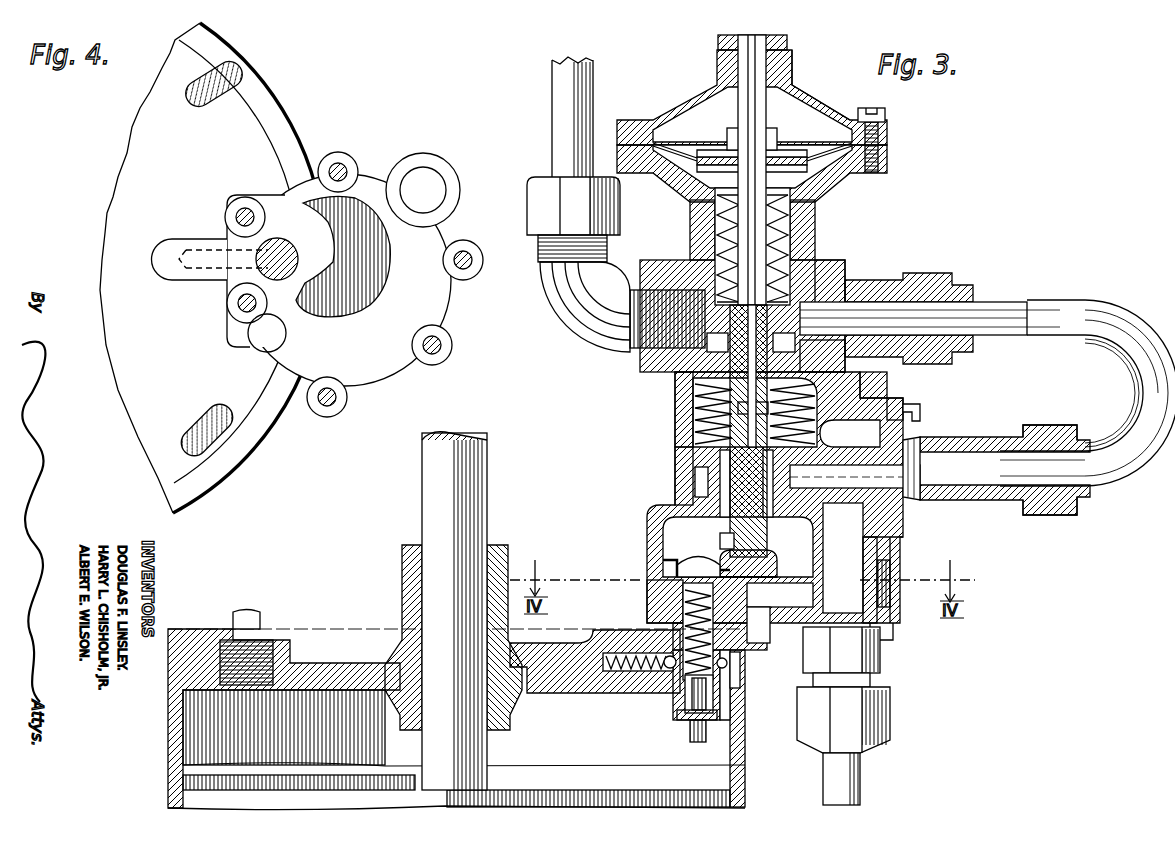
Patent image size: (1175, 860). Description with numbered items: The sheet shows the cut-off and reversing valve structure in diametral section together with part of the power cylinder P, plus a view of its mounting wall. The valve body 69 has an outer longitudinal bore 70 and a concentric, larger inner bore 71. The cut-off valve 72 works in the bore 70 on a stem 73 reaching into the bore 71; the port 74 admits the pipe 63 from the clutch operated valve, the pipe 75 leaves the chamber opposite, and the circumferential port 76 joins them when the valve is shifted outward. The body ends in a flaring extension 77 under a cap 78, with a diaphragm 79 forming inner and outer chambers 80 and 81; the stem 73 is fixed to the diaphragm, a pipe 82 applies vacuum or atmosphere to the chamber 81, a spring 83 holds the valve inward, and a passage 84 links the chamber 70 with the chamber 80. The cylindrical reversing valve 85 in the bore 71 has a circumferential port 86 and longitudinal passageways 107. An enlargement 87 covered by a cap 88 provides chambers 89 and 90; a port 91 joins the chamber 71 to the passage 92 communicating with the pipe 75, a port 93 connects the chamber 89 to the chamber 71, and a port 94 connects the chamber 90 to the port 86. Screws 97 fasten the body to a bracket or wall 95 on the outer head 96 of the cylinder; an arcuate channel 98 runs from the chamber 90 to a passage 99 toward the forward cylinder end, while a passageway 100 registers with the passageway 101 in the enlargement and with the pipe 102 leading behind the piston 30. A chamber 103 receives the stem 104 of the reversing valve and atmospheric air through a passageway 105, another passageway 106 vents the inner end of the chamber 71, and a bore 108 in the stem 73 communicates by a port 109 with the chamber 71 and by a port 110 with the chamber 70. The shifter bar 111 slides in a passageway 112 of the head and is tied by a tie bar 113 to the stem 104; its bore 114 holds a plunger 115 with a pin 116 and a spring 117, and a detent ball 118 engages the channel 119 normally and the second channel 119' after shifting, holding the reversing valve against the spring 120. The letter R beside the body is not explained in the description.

In FIG. 3, the piston 30 is at (545, 790).
In FIG. 3, the pipe 63 is at (576, 122).
In FIG. 3, the valve body 69 is at (685, 432).
In FIG. 3, the outer longitudinal bore 70 is at (800, 245).
In FIG. 3, the inner bore 71 is at (712, 400).
In FIG. 3, the cut-off valve 72 is at (700, 345).
In FIG. 3, the stem 73 is at (725, 240).
In FIG. 3, the port 74 is at (698, 315).
In FIG. 3, the pipe 75 is at (1050, 312).
In FIG. 3, the port 76 is at (810, 336).
In FIG. 3, the flaring extension 77 is at (862, 172).
In FIG. 3, the cap 78 is at (806, 104).
In FIG. 3, the diaphragm 79 is at (820, 138).
In FIG. 3, the inner chamber 80 is at (672, 180).
In FIG. 3, the outer chamber 81 is at (720, 110).
In FIG. 3, the pipe 82 is at (735, 40).
In FIG. 3, the spring 83 is at (815, 266).
In FIG. 3, the passage 84 is at (800, 190).
In FIG. 3, the reversing valve 85 is at (695, 482).
In FIG. 3, the port 86 is at (818, 472).
In FIG. 3, the enlargement 87 is at (896, 405).
In FIG. 3, the cap 88 is at (950, 515).
In FIG. 3, the outer chamber 89 is at (856, 430).
In FIG. 3, the inner chamber 90 is at (850, 556).
In FIG. 3, the port 91 is at (885, 538).
In FIG. 3, the passage 92 is at (985, 512).
In FIG. 3, the port 93 is at (845, 433).
In FIG. 3, the port 94 is at (818, 505).
In FIG. 4, the bracket or wall 95 is at (392, 378).
In FIG. 3, the bracket or wall 95 is at (895, 618).
In FIG. 4, the outer head 96 is at (283, 433).
In FIG. 3, the outer head 96 is at (600, 695).
In FIG. 4, the screws 97 is at (442, 345).
In FIG. 3, the screws 97 is at (893, 635).
In FIG. 4, the arcuate channel 98 is at (345, 362).
In FIG. 3, the arcuate channel 98 is at (880, 598).
In FIG. 4, the passage 99 is at (262, 340).
In FIG. 4, the passageway 100 is at (424, 180).
In FIG. 3, the passageway 100 is at (802, 621).
In FIG. 3, the passageway 101 is at (920, 416).
In FIG. 3, the pipe 102 is at (862, 780).
In FIG. 3, the chamber 103 is at (660, 556).
In FIG. 3, the stem 104 is at (762, 535).
In FIG. 3, the passageway 105 is at (774, 550).
In FIG. 3, the passageway 106 is at (700, 392).
In FIG. 3, the passageways 107 is at (727, 540).
In FIG. 3, the bore 108 is at (808, 366).
In FIG. 3, the wall 109 is at (690, 425).
In FIG. 3, the port 110 is at (740, 325).
In FIG. 4, the shifter bar 111 is at (277, 242).
In FIG. 3, the shifter bar 111 is at (672, 605).
In FIG. 4, the passageway 112 is at (263, 290).
In FIG. 3, the tie bar 113 is at (716, 558).
In FIG. 3, the bore 114 is at (740, 656).
In FIG. 3, the plunger 115 is at (695, 706).
In FIG. 3, the pin 116 is at (698, 740).
In FIG. 3, the spring 117 is at (683, 615).
In FIG. 3, the detent ball 118 is at (640, 675).
In FIG. 3, the detent channel 119 is at (755, 672).
In FIG. 3, the second channel 119' is at (653, 686).
In FIG. 3, the spring 120 is at (740, 408).
In FIG. 4, the power cylinder P is at (210, 486).
In FIG. 3, the power cylinder P is at (738, 784).
In FIG. 3, the chamber R is at (668, 438).